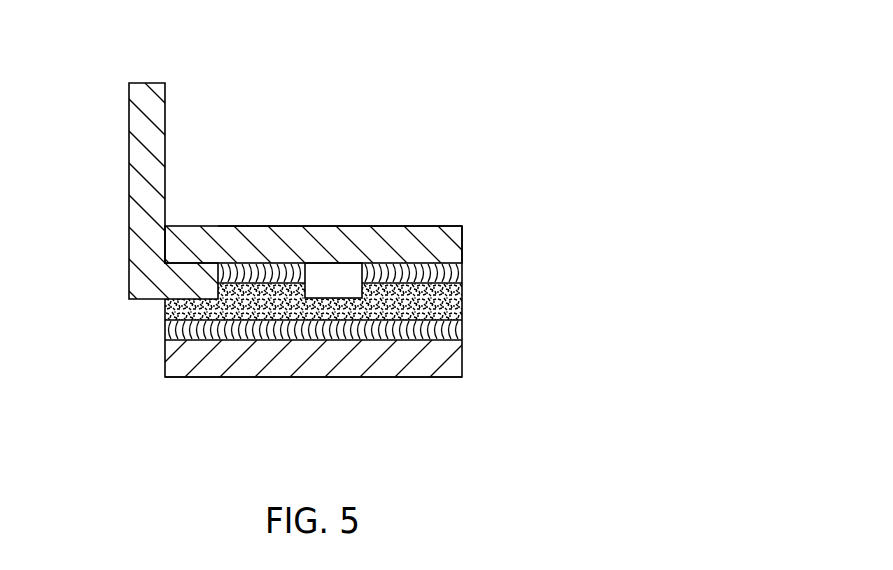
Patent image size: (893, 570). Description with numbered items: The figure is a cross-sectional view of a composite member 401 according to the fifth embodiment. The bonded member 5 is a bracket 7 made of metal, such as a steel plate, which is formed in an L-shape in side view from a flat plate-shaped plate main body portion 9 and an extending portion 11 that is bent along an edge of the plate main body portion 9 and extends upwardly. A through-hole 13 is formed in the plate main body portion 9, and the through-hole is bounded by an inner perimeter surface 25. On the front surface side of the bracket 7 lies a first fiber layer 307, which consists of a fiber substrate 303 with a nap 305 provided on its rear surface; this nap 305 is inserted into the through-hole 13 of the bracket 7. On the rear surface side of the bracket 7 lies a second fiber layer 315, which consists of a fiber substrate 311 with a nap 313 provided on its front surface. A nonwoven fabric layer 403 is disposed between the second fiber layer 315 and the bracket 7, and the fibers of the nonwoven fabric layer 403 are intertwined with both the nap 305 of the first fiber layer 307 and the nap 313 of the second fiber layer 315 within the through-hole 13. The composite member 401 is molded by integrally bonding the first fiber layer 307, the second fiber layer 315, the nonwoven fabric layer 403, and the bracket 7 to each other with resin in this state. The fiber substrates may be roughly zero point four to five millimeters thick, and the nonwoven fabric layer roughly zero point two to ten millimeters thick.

The composite member 401 is at (386, 99).
The bracket 7 is at (196, 185).
The bonded member 5 is at (196, 185).
The extending portion 11 is at (129, 182).
The fiber substrate 303 is at (320, 195).
The first fiber layer 307 is at (310, 226).
The plate main body portion 9 is at (322, 297).
The inner perimeter surface 25 is at (233, 272).
The through-hole 13 is at (249, 206).
The nap 305 is at (329, 206).
The nonwoven fabric layer 403 is at (463, 300).
The nap 313 is at (254, 333).
The fiber substrate 311 is at (328, 406).
The second fiber layer 315 is at (347, 377).